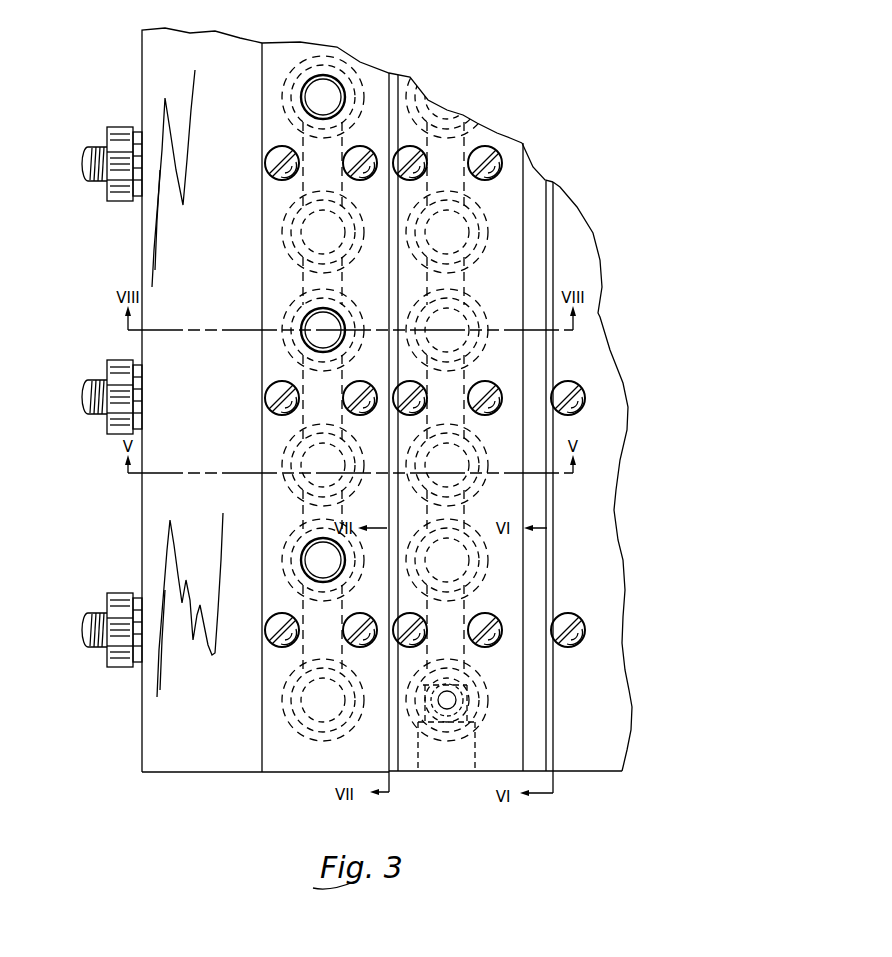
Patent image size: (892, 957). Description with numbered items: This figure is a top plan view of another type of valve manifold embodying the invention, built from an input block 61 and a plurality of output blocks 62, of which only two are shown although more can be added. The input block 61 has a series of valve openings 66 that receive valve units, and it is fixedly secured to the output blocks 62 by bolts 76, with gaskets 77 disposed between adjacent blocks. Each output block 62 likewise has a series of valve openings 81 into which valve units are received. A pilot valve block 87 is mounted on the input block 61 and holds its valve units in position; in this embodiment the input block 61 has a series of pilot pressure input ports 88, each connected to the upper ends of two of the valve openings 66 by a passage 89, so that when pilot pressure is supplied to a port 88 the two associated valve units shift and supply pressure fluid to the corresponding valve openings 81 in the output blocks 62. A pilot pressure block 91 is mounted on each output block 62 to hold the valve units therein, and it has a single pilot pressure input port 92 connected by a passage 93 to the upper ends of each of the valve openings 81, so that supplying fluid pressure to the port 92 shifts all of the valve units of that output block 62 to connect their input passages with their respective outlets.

The input block 61 is at (150, 760).
The output block 62 is at (405, 773).
The valve opening 66 is at (280, 462).
The bolt 76 is at (87, 380).
The gasket 77 is at (549, 773).
The valve opening 81 is at (472, 592).
The pilot valve block 87 is at (275, 748).
The pilot pressure input port 88 is at (312, 316).
The passage 89 is at (294, 378).
The pilot pressure block 91 is at (480, 317).
The pilot pressure input port 92 is at (418, 768).
The passage 93 is at (466, 646).